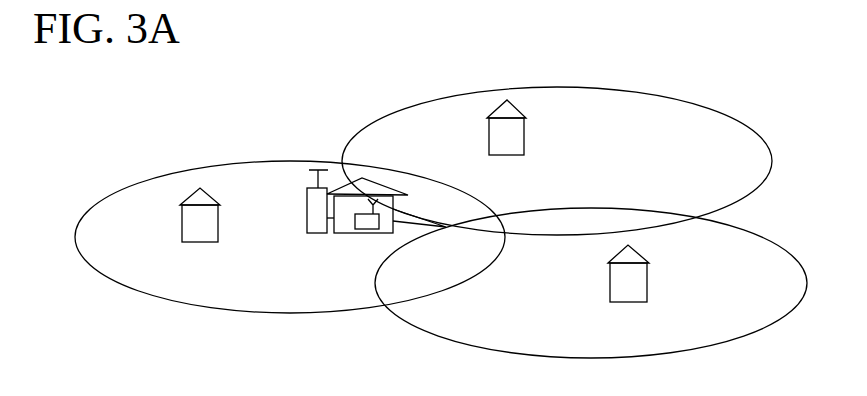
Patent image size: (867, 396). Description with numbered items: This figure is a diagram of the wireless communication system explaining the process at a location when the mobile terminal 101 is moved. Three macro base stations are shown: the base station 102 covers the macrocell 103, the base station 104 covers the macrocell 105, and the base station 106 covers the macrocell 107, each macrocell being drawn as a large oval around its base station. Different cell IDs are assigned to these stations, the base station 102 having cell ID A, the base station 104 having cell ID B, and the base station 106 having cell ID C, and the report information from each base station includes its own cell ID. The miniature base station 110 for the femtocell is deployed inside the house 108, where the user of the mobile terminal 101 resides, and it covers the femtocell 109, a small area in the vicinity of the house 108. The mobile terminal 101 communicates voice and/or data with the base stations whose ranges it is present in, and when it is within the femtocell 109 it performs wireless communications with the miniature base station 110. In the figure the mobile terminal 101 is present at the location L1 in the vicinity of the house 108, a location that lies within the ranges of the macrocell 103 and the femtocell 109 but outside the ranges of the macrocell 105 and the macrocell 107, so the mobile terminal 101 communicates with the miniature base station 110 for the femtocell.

The mobile terminal 101 is at (305, 218).
The base station 102 is at (221, 209).
The macrocell 103 is at (150, 179).
The base station 104 is at (526, 127).
The macrocell 105 is at (668, 97).
The base station 106 is at (649, 274).
The macrocell 107 is at (748, 233).
The house 108 is at (386, 186).
The femtocell 109 is at (328, 243).
The miniature base station for the femtocell 110 is at (366, 230).
The location L1 is at (310, 235).